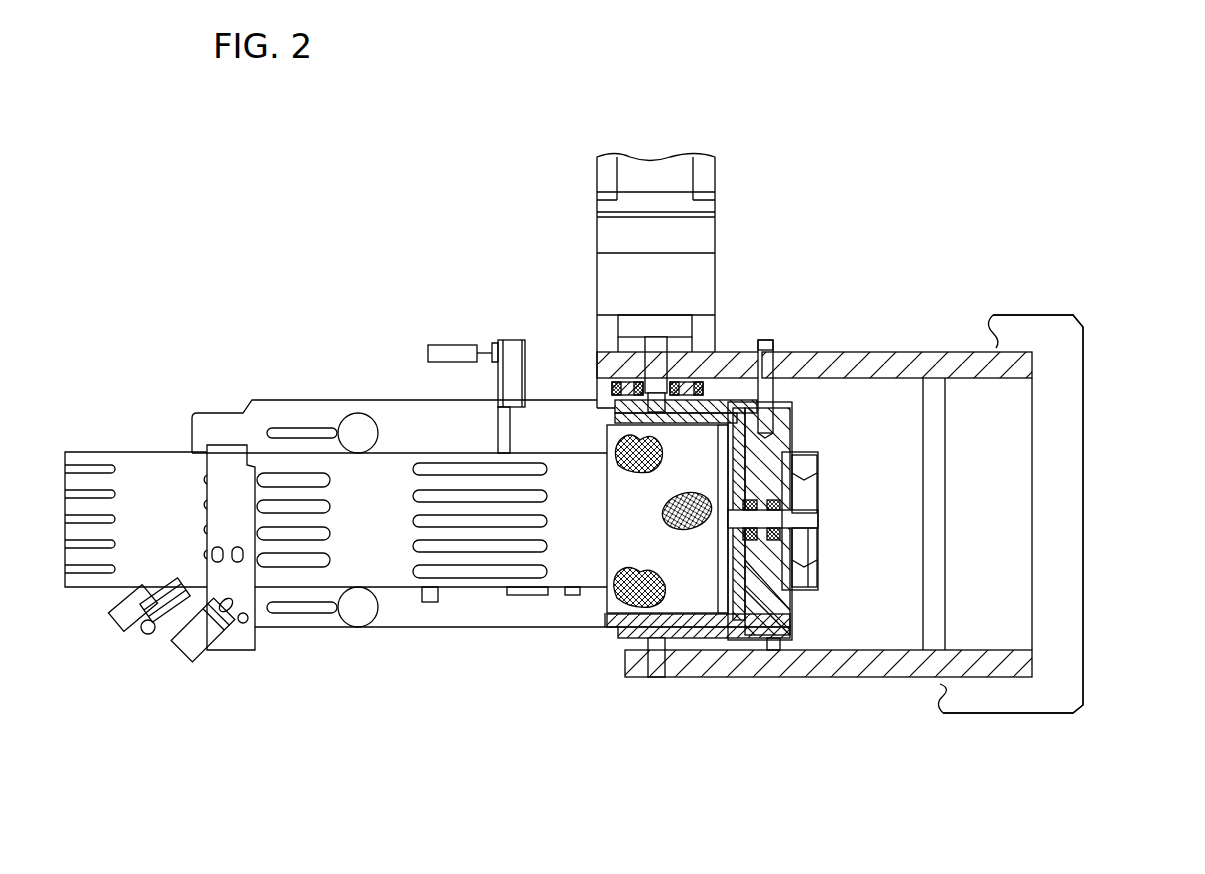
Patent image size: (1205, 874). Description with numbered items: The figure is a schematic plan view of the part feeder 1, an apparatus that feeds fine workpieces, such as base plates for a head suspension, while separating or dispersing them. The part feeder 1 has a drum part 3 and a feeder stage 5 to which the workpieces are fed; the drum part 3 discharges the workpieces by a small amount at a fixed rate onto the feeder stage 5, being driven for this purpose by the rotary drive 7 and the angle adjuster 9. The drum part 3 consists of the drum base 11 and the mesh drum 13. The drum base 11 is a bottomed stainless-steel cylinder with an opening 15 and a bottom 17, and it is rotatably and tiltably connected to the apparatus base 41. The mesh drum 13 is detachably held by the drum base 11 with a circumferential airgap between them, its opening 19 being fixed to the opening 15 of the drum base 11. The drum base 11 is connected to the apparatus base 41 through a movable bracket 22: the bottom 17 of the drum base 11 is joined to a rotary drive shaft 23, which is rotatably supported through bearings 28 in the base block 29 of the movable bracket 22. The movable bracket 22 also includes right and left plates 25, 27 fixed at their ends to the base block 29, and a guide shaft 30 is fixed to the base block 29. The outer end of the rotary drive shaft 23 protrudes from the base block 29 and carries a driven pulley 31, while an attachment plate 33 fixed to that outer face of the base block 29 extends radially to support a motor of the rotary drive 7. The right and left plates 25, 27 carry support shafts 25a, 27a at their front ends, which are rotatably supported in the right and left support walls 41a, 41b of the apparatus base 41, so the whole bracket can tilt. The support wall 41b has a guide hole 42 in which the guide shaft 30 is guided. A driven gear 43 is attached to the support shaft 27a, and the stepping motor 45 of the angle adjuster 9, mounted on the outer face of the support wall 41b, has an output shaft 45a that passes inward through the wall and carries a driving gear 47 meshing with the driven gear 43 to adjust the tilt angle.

The part feeder 1 is at (940, 163).
The drum part 3 is at (592, 607).
The feeder stage 5 is at (328, 460).
The rotary drive 7 is at (832, 553).
The angle adjuster 9 is at (732, 217).
The drum base 11 is at (680, 640).
The mesh drum 13 is at (605, 545).
The opening 15 is at (605, 632).
The bottom 17 is at (750, 560).
The opening 19 is at (605, 485).
The movable bracket 22 is at (733, 645).
The rotary drive shaft 23 is at (808, 520).
The right plate 25 is at (700, 640).
The support shaft 25a is at (657, 678).
The left plate 27 is at (718, 400).
The support shaft 27a is at (603, 410).
The bearings 28 is at (797, 463).
The base block 29 is at (790, 440).
The guide shaft 30 is at (760, 342).
The driven pulley 31 is at (808, 497).
The attachment plate 33 is at (767, 573).
The apparatus base 41 is at (1027, 332).
The right support wall 41a is at (797, 677).
The left support wall 41b is at (870, 350).
The guide hole 42 is at (777, 343).
The driven gear 43 is at (715, 395).
The stepping motor 45 is at (612, 230).
The output shaft 45a is at (633, 347).
The driving gear 47 is at (653, 365).